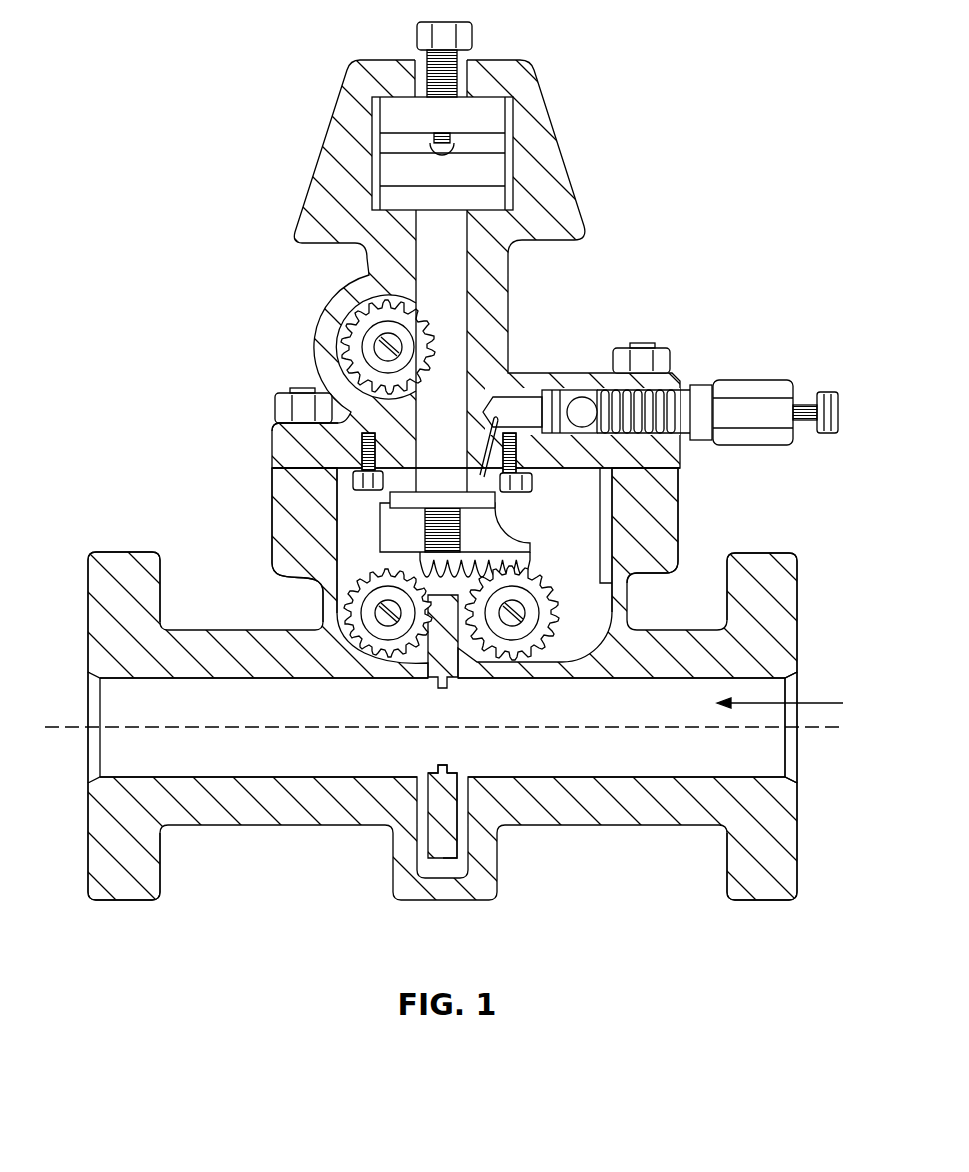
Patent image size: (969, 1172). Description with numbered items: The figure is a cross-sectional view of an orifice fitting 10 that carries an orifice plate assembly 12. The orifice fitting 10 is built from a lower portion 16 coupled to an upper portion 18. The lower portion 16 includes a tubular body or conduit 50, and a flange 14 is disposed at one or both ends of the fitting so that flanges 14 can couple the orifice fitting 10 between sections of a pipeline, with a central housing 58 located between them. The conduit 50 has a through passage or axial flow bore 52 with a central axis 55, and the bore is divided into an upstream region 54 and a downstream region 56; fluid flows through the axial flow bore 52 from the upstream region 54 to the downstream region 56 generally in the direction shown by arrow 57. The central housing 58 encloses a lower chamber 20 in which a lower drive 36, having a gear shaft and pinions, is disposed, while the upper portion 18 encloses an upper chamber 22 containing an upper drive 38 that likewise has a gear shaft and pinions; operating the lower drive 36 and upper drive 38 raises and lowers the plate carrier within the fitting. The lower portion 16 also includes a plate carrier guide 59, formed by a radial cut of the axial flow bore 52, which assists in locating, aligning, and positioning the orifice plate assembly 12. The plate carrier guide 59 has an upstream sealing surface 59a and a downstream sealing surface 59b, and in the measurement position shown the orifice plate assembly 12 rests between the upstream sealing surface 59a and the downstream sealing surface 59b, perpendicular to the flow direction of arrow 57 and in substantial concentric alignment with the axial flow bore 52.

The orifice fitting 10 is at (645, 287).
The orifice plate assembly 12 is at (443, 688).
The flange 14 is at (97, 577).
The lower portion 16 is at (280, 527).
The upper portion 18 is at (483, 295).
The lower chamber 20 is at (580, 558).
The upper chamber 22 is at (473, 245).
The lower drive 36 is at (337, 606).
The upper drive 38 is at (338, 332).
The conduit 50 is at (258, 817).
The axial flow bore 52 is at (756, 753).
The upstream region 54 is at (621, 727).
The central axis 55 is at (75, 725).
The downstream region 56 is at (264, 727).
The arrow 57 is at (823, 702).
The central housing 58 is at (313, 510).
The plate carrier guide 59 is at (460, 795).
The upstream sealing surface 59a is at (480, 797).
The downstream sealing surface 59b is at (427, 793).